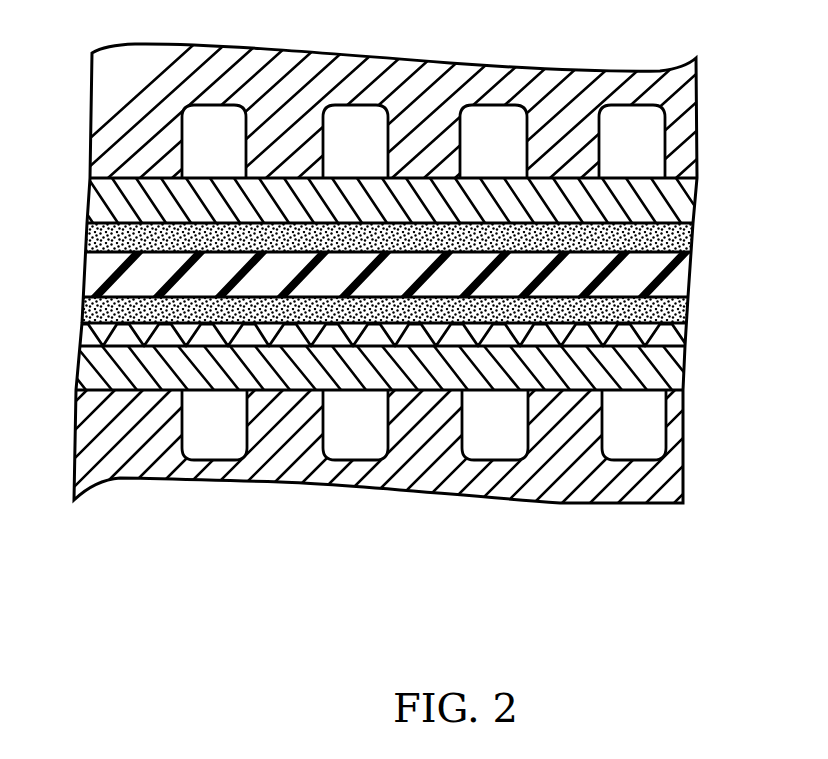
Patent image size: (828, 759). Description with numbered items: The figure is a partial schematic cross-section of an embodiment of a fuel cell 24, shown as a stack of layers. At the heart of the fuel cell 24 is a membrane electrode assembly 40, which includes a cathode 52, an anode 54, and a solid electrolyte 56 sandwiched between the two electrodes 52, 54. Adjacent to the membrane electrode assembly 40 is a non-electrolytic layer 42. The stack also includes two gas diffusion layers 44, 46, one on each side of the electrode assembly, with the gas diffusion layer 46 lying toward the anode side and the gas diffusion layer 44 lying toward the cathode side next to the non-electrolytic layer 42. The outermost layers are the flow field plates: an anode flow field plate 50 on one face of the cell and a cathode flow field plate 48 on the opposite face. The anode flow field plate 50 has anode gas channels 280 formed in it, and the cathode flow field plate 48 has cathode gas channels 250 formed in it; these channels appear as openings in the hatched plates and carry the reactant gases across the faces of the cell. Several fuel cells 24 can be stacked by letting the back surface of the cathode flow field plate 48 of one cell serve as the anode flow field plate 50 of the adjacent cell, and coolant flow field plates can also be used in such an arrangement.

The fuel cell 24 is at (414, 330).
The membrane electrode assembly 40 is at (390, 273).
The non-electrolytic layer 42 is at (364, 335).
The gas diffusion layer 44 is at (387, 368).
The gas diffusion layer 46 is at (396, 200).
The cathode flow field plate 48 is at (393, 449).
The anode flow field plate 50 is at (437, 108).
The cathode 52 is at (390, 310).
The anode 54 is at (390, 237).
The solid electrolyte 56 is at (390, 274).
The cathode gas channels 250 is at (214, 424).
The anode gas channels 280 is at (214, 142).